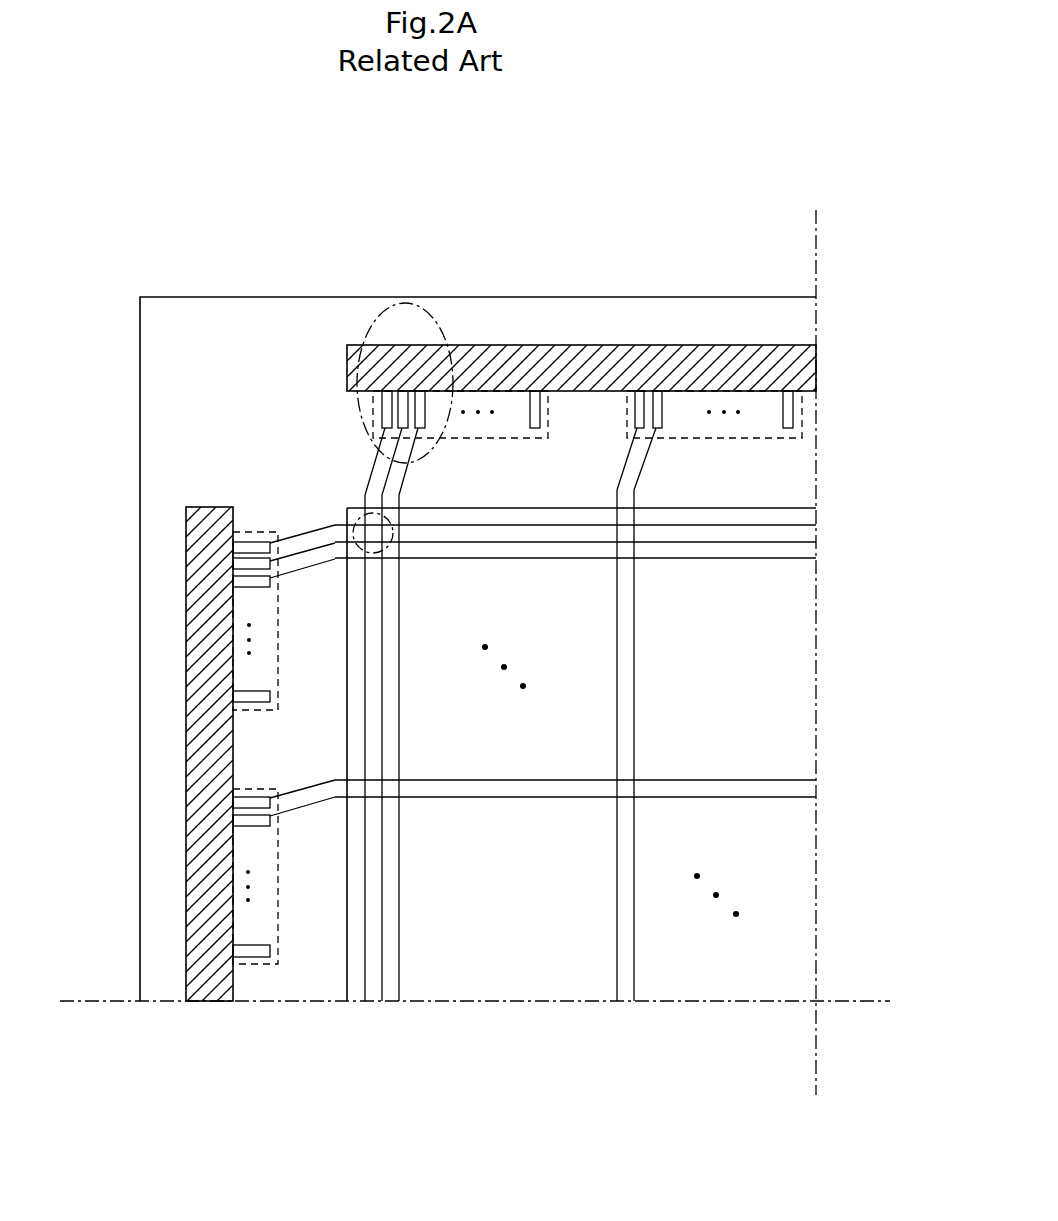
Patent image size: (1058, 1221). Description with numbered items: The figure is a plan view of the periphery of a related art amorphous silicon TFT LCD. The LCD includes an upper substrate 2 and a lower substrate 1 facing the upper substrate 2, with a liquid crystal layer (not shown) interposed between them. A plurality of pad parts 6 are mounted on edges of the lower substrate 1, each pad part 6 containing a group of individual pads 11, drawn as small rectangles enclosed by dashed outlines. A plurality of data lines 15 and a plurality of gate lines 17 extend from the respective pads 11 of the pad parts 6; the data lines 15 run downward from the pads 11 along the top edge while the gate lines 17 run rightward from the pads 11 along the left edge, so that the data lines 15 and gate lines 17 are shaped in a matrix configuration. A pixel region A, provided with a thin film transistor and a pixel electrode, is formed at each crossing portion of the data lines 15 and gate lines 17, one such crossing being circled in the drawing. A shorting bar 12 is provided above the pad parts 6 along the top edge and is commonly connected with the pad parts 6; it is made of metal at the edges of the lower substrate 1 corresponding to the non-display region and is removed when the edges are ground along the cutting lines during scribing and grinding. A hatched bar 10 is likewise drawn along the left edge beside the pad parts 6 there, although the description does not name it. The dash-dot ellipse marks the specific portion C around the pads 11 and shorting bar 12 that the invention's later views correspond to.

The lower substrate 1 is at (140, 352).
The upper substrate 2 is at (773, 508).
The pad part 6 is at (372, 413).
The gate driver 10 is at (278, 673).
The pad 11 is at (422, 399).
The shorting bar 12 is at (650, 365).
The data line 15 is at (364, 495).
The gate line 17 is at (335, 525).
The pixel region A is at (388, 547).
The specific portion C is at (432, 302).